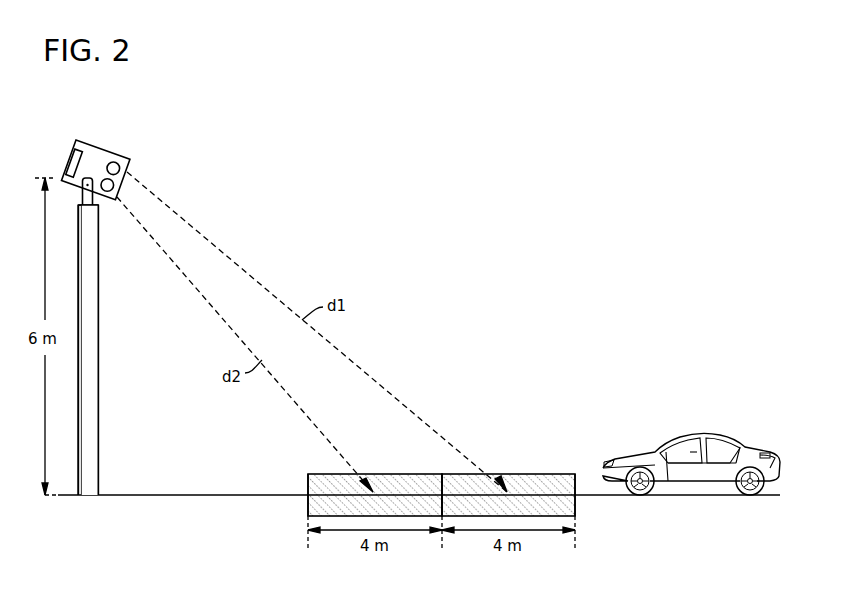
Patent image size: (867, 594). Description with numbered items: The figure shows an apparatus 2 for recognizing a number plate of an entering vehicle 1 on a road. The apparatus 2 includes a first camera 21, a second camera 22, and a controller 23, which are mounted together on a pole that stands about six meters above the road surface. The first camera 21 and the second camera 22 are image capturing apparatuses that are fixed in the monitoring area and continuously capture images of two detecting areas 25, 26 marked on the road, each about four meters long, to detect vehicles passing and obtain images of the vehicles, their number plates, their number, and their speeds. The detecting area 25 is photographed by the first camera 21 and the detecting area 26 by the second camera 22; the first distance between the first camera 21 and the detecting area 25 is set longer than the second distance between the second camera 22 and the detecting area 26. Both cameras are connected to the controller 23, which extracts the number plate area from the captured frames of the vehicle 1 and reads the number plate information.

The vehicle 1 is at (713, 434).
The apparatus for recognizing a number plate 2 is at (104, 151).
The first camera 21 is at (118, 162).
The second camera 22 is at (108, 192).
The controller 23 is at (70, 160).
The detecting area 25 is at (537, 483).
The detecting area 26 is at (327, 483).